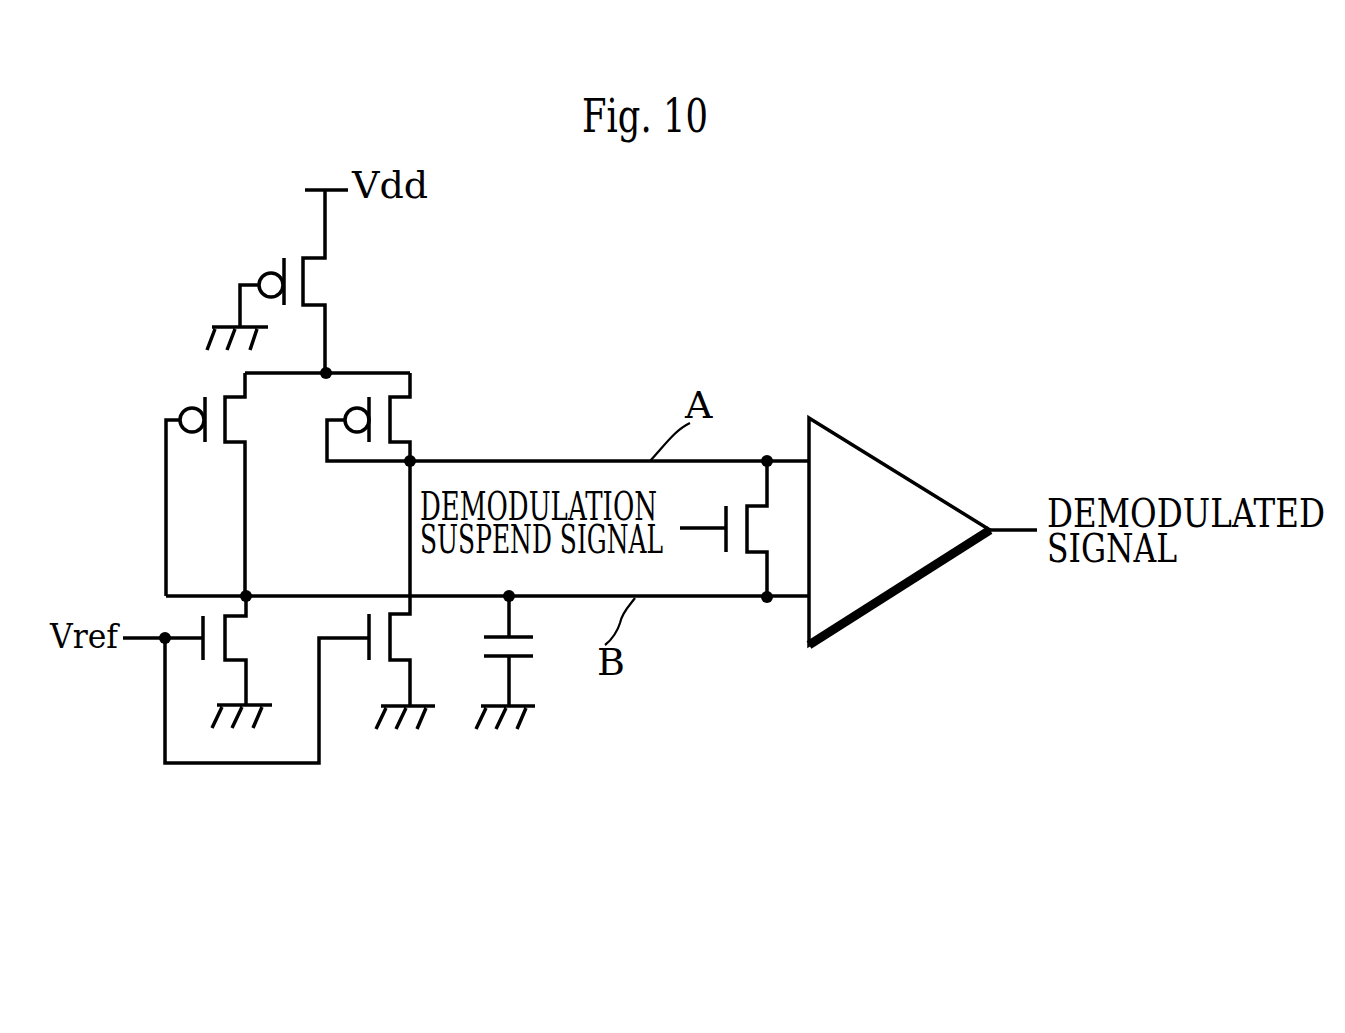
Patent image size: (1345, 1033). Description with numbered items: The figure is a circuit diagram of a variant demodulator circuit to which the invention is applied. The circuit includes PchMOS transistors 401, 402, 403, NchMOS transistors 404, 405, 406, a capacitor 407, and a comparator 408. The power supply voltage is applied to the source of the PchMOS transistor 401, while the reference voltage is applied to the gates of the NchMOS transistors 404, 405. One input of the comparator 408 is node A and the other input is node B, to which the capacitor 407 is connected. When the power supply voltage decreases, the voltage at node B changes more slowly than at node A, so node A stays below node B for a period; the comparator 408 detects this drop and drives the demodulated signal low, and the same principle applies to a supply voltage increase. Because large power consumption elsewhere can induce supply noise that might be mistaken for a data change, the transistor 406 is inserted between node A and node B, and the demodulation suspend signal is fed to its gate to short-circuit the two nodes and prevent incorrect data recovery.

The PchMOS transistor 401 is at (315, 290).
The PchMOS transistor 402 is at (192, 398).
The PchMOS transistor 403 is at (418, 428).
The NchMOS transistor 404 is at (198, 628).
The NchMOS transistor 405 is at (363, 656).
The NchMOS transistor 406 is at (718, 542).
The capacitor 407 is at (523, 658).
The comparator 408 is at (910, 478).